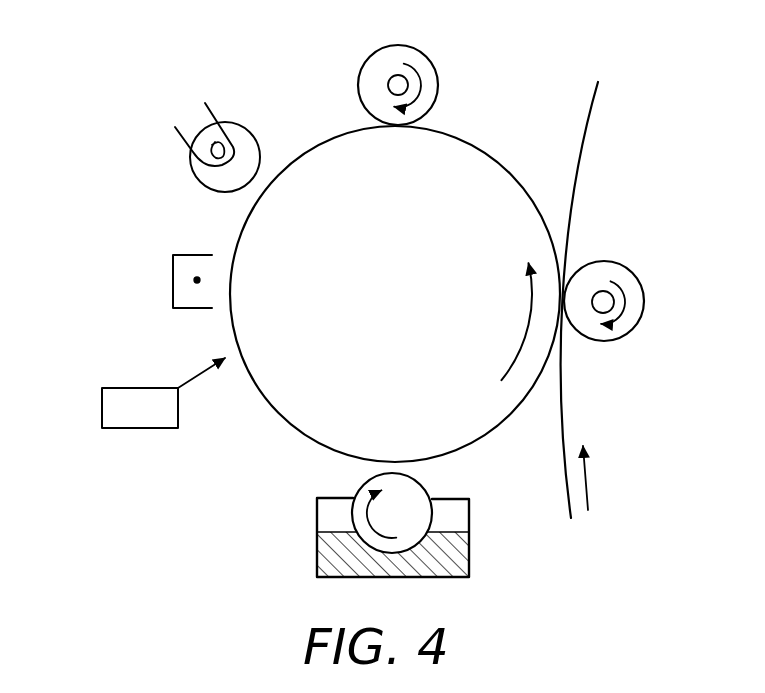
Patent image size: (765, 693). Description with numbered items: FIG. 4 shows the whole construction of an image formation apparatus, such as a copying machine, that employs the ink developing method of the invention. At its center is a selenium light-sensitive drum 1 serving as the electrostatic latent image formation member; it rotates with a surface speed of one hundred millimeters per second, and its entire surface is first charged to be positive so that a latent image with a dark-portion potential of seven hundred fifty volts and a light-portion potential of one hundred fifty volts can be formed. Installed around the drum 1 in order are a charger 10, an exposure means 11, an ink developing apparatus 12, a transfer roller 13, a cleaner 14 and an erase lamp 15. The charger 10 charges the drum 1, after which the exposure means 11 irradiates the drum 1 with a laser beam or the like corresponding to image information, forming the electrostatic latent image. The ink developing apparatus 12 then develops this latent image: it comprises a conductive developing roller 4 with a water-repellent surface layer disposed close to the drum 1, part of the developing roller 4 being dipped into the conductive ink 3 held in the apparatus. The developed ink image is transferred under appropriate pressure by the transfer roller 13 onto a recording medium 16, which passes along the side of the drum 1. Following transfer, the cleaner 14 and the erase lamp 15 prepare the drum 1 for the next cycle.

The light-sensitive drum 1 is at (485, 150).
The conductive ink 3 is at (462, 560).
The developing roller 4 is at (415, 495).
The charger 10 is at (173, 268).
The exposure means 11 is at (115, 388).
The ink developing apparatus 12 is at (308, 553).
The transfer roller 13 is at (645, 295).
The cleaner 14 is at (428, 62).
The erase lamp 15 is at (240, 123).
The recording medium 16 is at (578, 158).